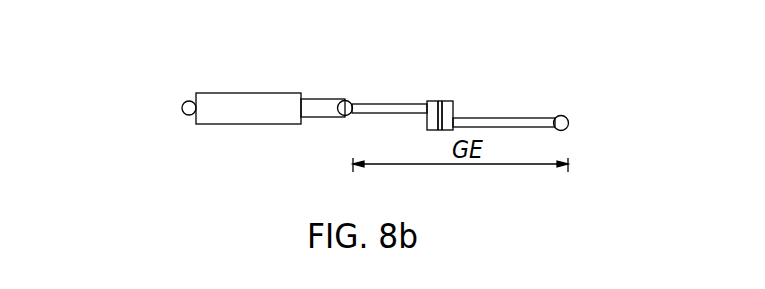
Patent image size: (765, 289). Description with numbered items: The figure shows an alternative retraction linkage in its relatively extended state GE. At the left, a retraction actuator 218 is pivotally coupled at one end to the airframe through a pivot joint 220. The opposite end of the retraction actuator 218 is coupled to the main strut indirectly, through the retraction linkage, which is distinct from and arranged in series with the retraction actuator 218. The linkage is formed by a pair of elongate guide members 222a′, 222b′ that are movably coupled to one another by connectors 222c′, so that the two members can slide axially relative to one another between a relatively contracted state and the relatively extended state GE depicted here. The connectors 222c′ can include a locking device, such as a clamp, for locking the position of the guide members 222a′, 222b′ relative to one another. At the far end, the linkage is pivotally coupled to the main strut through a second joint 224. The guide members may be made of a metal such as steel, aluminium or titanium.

The retraction actuator 218 is at (228, 92).
The pivot joint 220 is at (182, 105).
The elongate guide member 222a′ is at (388, 103).
The connectors 222c′ is at (451, 100).
The elongate guide member 222b′ is at (522, 117).
The second joint 224 is at (570, 121).